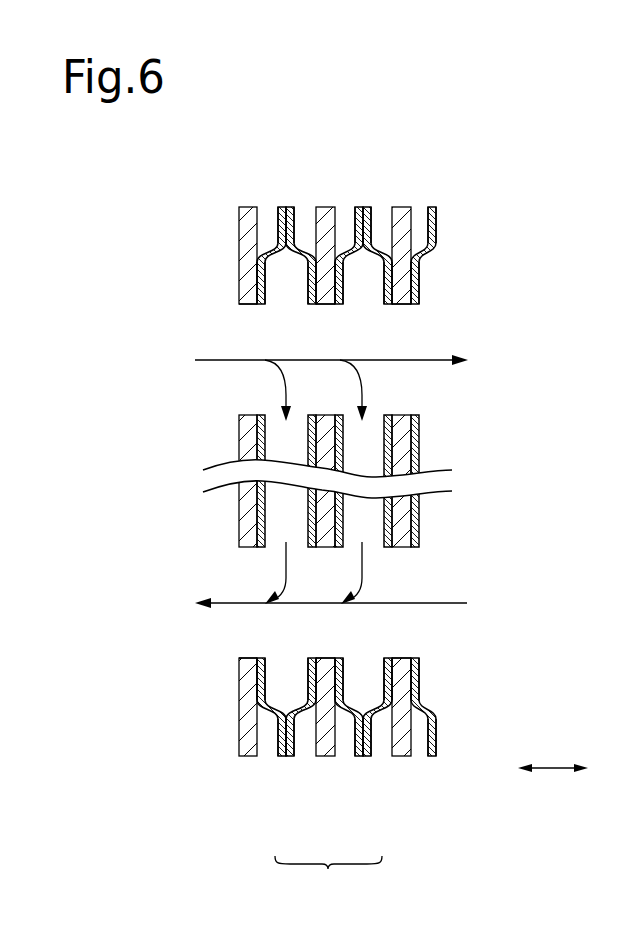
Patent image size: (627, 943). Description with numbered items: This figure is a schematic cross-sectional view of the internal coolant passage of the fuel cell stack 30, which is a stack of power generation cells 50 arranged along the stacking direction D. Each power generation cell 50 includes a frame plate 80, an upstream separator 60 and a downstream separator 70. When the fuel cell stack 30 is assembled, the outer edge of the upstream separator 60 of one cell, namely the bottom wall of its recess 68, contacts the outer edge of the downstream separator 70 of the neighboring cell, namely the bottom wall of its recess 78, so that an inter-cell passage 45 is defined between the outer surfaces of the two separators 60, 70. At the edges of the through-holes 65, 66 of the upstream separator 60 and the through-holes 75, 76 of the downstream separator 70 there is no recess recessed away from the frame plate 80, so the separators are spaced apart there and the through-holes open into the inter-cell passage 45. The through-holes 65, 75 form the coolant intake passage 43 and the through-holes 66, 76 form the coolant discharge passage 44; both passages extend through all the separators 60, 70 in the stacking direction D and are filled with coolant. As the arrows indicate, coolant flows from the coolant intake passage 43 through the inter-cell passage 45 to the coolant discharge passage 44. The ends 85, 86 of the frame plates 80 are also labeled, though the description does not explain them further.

The fuel cell stack 30 is at (522, 191).
The coolant intake passage 43 is at (397, 378).
The coolant discharge passage 44 is at (403, 570).
The inter-cell passage 45 is at (286, 435).
The power generation cell 50 is at (328, 877).
The upstream separator 60 is at (351, 481).
The through-hole 65 is at (312, 305).
The through-hole 66 is at (312, 658).
The recess 68 is at (292, 207).
The downstream separator 70 is at (330, 481).
The through-hole 75 is at (259, 305).
The through-hole 76 is at (259, 658).
The recess 78 is at (279, 208).
The frame plate 80 is at (247, 207).
The end of plate 85 is at (248, 306).
The end of plate 86 is at (248, 658).
The stacking direction D is at (553, 768).